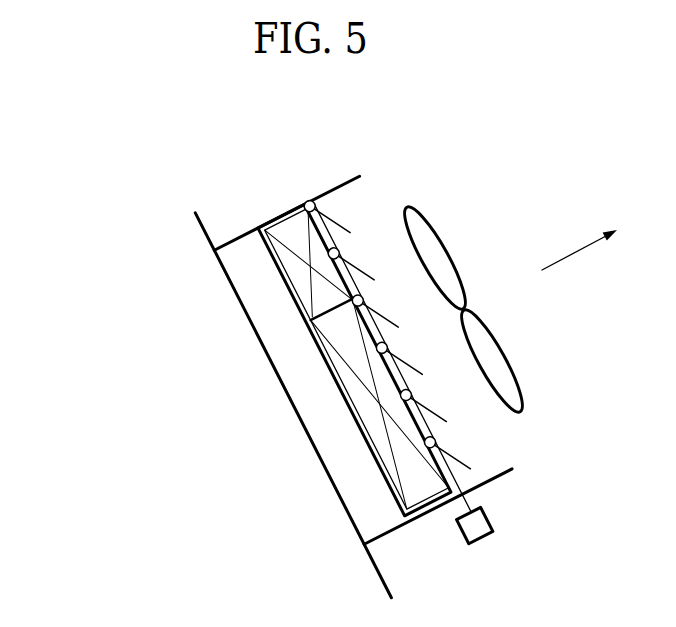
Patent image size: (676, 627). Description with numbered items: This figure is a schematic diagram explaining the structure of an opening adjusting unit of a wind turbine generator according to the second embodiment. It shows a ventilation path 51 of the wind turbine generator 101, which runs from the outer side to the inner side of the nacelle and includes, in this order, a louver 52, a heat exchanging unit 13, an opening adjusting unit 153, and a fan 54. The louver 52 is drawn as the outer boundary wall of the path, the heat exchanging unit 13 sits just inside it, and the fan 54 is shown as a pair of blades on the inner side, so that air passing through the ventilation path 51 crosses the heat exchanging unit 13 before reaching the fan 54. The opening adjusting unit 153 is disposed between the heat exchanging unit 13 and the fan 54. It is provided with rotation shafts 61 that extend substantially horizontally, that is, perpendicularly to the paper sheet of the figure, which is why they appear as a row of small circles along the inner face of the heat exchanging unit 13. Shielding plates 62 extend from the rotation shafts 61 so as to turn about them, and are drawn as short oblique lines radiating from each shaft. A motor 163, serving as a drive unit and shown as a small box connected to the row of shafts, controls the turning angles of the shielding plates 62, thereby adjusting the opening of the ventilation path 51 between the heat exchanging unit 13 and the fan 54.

The wind turbine generator 101 is at (100, 177).
The ventilation path 51 is at (282, 210).
The rotation shafts 61 is at (312, 202).
The shielding plates 62 is at (338, 222).
The opening adjusting unit 153 is at (355, 195).
The louver 52 is at (272, 343).
The fan 54 is at (507, 362).
The heat exchanging unit 13 is at (425, 508).
The motor (drive unit) 163 is at (482, 540).